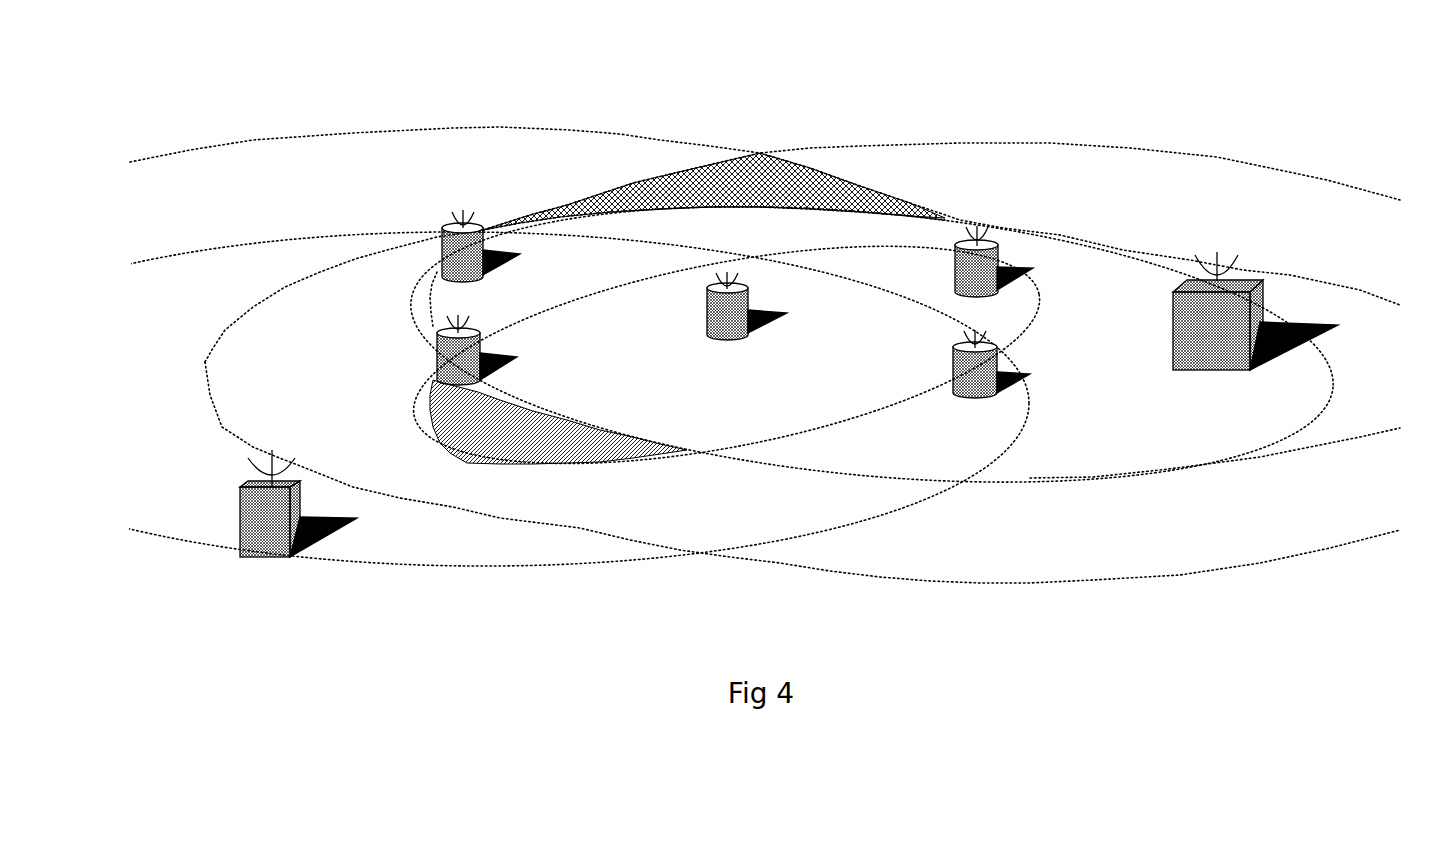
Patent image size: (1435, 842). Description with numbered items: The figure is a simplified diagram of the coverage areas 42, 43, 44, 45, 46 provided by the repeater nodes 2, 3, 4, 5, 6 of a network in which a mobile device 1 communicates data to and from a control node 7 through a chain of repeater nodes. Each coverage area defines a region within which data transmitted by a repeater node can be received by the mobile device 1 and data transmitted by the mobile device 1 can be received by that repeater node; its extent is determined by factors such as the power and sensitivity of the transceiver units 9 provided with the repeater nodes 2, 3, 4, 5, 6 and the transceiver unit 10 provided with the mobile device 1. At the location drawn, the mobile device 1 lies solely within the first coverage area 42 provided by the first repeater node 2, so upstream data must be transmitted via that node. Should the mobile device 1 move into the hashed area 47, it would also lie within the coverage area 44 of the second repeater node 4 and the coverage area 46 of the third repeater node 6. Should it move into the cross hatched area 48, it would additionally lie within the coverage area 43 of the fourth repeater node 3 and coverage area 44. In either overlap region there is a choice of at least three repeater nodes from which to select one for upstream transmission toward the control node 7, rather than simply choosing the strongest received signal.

The mobile device 1 is at (262, 560).
The first repeater node 2 is at (440, 357).
The fourth repeater node 3 is at (452, 278).
The second repeater node 4 is at (727, 337).
The repeater node 5 is at (978, 293).
The third repeater node 6 is at (972, 396).
The control node 7 is at (1222, 372).
The transceiver units 9 is at (452, 222).
The transceiver unit 10 is at (255, 462).
The first coverage area 42 is at (515, 410).
The coverage area 43 is at (765, 205).
The coverage area 44 is at (899, 353).
The coverage area 45 is at (802, 243).
The coverage area 46 is at (802, 482).
The hashed area 47 is at (558, 422).
The cross hatched area 48 is at (714, 191).